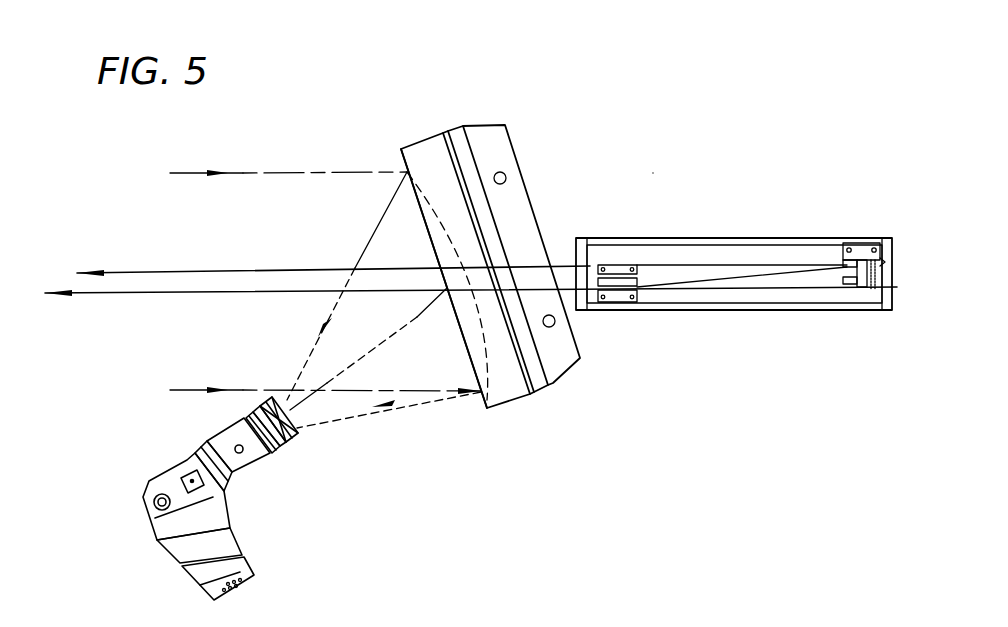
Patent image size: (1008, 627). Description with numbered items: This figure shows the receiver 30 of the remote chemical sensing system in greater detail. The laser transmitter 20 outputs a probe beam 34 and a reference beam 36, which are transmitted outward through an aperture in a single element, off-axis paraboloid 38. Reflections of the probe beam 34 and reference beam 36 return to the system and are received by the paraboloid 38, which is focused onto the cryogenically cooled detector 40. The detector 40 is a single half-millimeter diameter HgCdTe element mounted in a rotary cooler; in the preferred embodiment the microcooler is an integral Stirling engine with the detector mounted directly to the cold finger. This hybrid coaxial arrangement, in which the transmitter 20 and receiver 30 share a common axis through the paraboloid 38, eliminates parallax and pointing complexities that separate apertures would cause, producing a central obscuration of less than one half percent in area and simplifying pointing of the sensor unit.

The laser transmitter 20 is at (766, 237).
The receiver 30 is at (658, 170).
The probe beam 34 is at (200, 272).
The reference beam 36 is at (471, 258).
The off-axis paraboloid 38 is at (427, 138).
The detector 40 is at (153, 528).